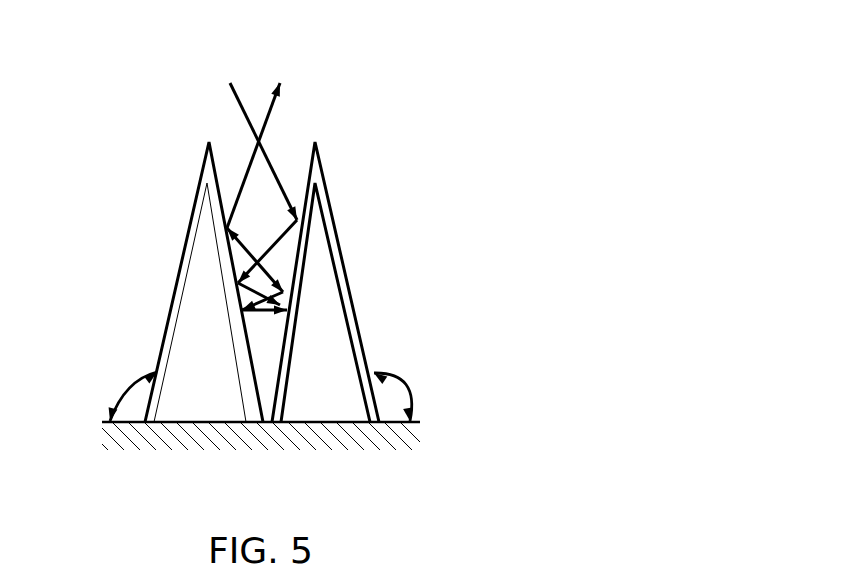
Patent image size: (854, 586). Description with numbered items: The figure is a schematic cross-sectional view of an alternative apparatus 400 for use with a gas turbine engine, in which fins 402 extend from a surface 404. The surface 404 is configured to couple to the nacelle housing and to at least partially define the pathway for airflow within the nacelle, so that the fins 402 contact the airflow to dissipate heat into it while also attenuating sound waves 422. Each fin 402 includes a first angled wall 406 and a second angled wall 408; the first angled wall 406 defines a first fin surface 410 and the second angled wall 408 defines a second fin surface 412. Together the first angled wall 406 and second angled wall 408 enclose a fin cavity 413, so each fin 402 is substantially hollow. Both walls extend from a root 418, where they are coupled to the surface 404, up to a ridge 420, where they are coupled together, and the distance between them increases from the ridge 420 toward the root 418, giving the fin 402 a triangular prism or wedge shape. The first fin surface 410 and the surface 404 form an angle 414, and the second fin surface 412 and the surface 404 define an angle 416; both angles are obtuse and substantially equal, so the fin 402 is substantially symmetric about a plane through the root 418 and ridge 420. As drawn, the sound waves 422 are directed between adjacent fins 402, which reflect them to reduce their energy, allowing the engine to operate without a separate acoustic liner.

The apparatus 400 is at (375, 53).
The fins 402 is at (168, 322).
The surface 404 is at (132, 436).
The first angled wall 406 is at (295, 236).
The second angled wall 408 is at (362, 386).
The first fin surface 410 is at (316, 190).
The second fin surface 412 is at (217, 242).
The fin cavity 413 is at (327, 290).
The angle 414 is at (118, 382).
The angle 416 is at (397, 380).
The root 418 is at (217, 434).
The ridge 420 is at (208, 141).
The sound waves 422 is at (239, 95).